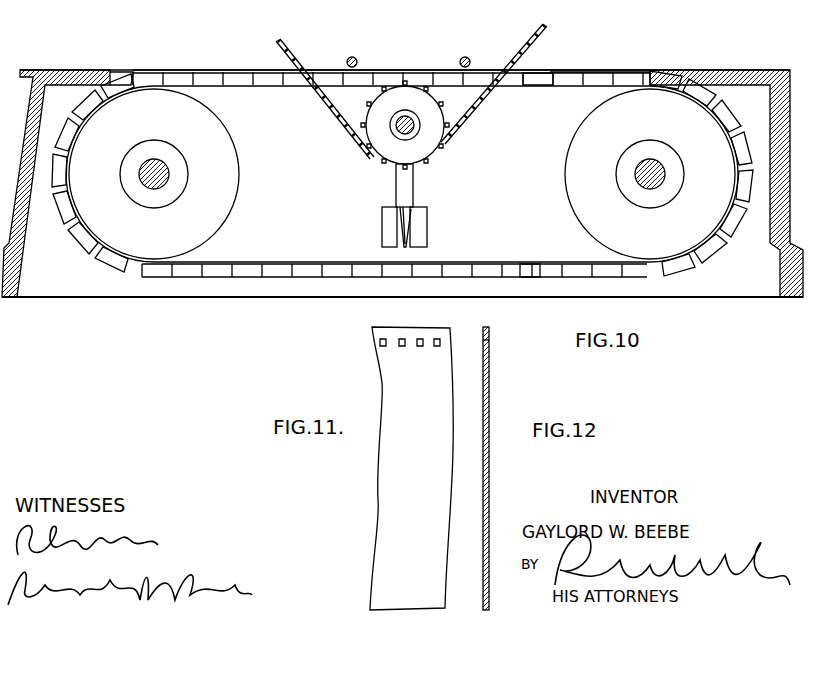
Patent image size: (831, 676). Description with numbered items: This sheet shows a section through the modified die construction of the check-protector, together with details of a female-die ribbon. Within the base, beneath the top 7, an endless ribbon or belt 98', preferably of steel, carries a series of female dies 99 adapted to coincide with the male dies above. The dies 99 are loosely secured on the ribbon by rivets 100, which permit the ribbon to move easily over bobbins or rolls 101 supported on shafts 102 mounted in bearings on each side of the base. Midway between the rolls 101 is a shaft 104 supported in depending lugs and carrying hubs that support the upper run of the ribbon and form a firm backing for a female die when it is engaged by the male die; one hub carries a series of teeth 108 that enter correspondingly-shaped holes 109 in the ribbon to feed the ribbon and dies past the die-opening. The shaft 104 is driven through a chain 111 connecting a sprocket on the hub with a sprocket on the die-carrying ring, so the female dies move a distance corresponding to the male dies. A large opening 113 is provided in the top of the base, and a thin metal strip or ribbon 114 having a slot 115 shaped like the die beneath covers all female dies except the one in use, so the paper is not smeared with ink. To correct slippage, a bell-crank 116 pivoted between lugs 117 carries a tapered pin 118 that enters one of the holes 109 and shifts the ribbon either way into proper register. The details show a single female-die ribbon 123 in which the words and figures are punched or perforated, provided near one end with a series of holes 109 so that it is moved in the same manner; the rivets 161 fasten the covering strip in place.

In FIG. 10, the top 7 is at (62, 71).
In FIG. 10, the large opening 113 is at (113, 71).
In FIG. 10, the slot 115 is at (400, 72).
In FIG. 10, the thin metal strip or ribbon 114 is at (567, 73).
In FIG. 10, the rivets 161 is at (471, 49).
In FIG. 10, the female dies 99 is at (483, 238).
In FIG. 10, the endless ribbon or belt 98' is at (538, 98).
In FIG. 10, the bobbins or rolls 101 is at (549, 177).
In FIG. 10, the shafts 102 is at (694, 152).
In FIG. 10, the shaft 104 is at (398, 137).
In FIG. 10, the teeth 108 is at (436, 94).
In FIG. 10, the chain 111 is at (468, 118).
In FIG. 10, the bell-crank 116 is at (413, 195).
In FIG. 10, the lugs 117 is at (438, 228).
In FIG. 10, the tapered pin 118 is at (420, 240).
In FIG. 10, the rivets 100 is at (528, 278).
In FIG. 11, the holes 109 is at (412, 340).
In FIG. 12, the holes 109 is at (490, 342).
In FIG. 11, the single female-die ribbon 123 is at (385, 386).
In FIG. 12, the single female-die ribbon 123 is at (489, 463).